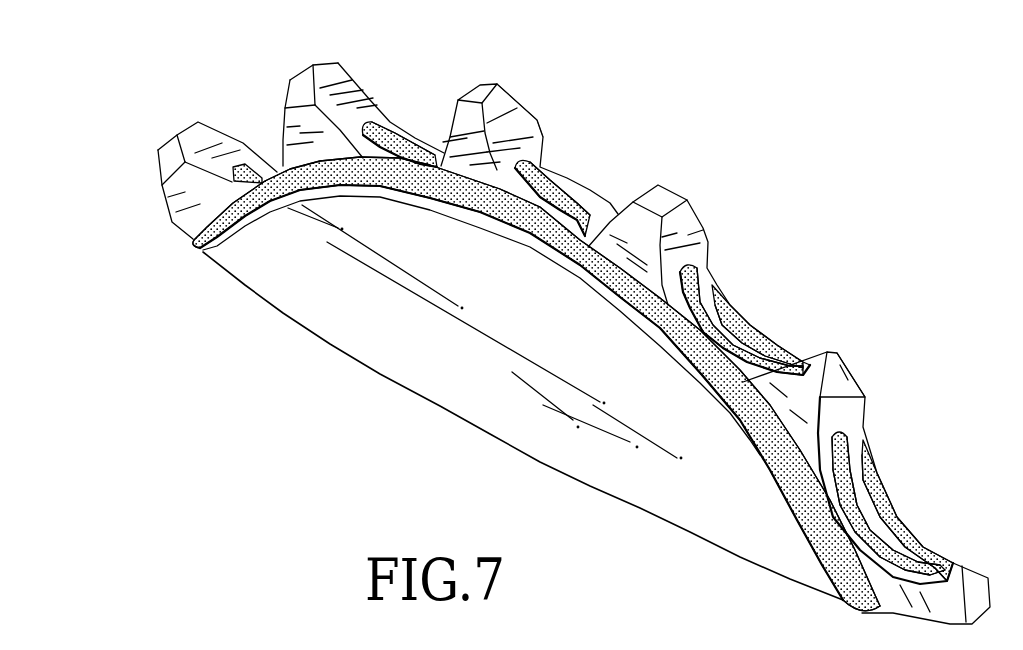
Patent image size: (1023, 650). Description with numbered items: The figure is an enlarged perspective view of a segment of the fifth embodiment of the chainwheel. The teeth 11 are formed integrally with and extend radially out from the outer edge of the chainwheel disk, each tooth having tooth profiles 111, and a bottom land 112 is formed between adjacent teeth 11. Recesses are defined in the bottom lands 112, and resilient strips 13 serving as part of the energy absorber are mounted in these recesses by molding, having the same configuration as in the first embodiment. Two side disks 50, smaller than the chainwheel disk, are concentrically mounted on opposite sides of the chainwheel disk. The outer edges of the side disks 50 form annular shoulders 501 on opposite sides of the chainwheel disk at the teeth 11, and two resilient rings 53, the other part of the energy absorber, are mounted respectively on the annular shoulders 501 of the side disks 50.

The teeth 11 is at (460, 133).
The tooth profiles 111 is at (520, 133).
The bottom land 112 is at (583, 213).
The resilient strips 13 is at (547, 187).
The side disks 50 is at (465, 398).
The annular shoulders 501 is at (702, 375).
The resilient rings 53 is at (685, 342).